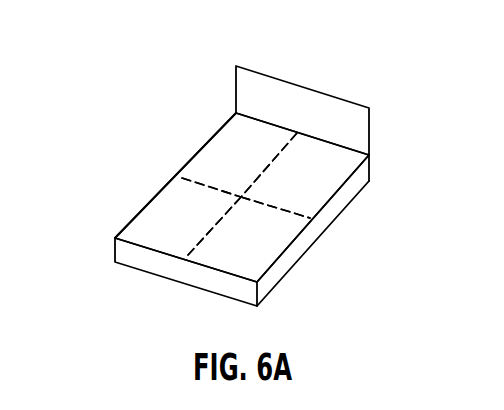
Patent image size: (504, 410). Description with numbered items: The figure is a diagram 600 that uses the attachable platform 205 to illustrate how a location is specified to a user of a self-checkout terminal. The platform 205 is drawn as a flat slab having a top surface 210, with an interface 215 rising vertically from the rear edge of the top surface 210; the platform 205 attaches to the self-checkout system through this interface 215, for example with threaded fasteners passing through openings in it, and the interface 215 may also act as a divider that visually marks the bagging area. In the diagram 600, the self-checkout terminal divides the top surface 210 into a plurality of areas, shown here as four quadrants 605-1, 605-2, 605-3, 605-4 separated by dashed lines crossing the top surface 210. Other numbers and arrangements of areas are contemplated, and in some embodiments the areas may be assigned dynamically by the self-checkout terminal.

The diagram 600 is at (352, 50).
The platform 205 is at (270, 293).
The top surface 210 is at (307, 197).
The interface 215 is at (128, 147).
The quadrant 605-1 is at (232, 135).
The quadrant 605-2 is at (340, 167).
The quadrant 605-3 is at (275, 242).
The quadrant 605-4 is at (163, 215).